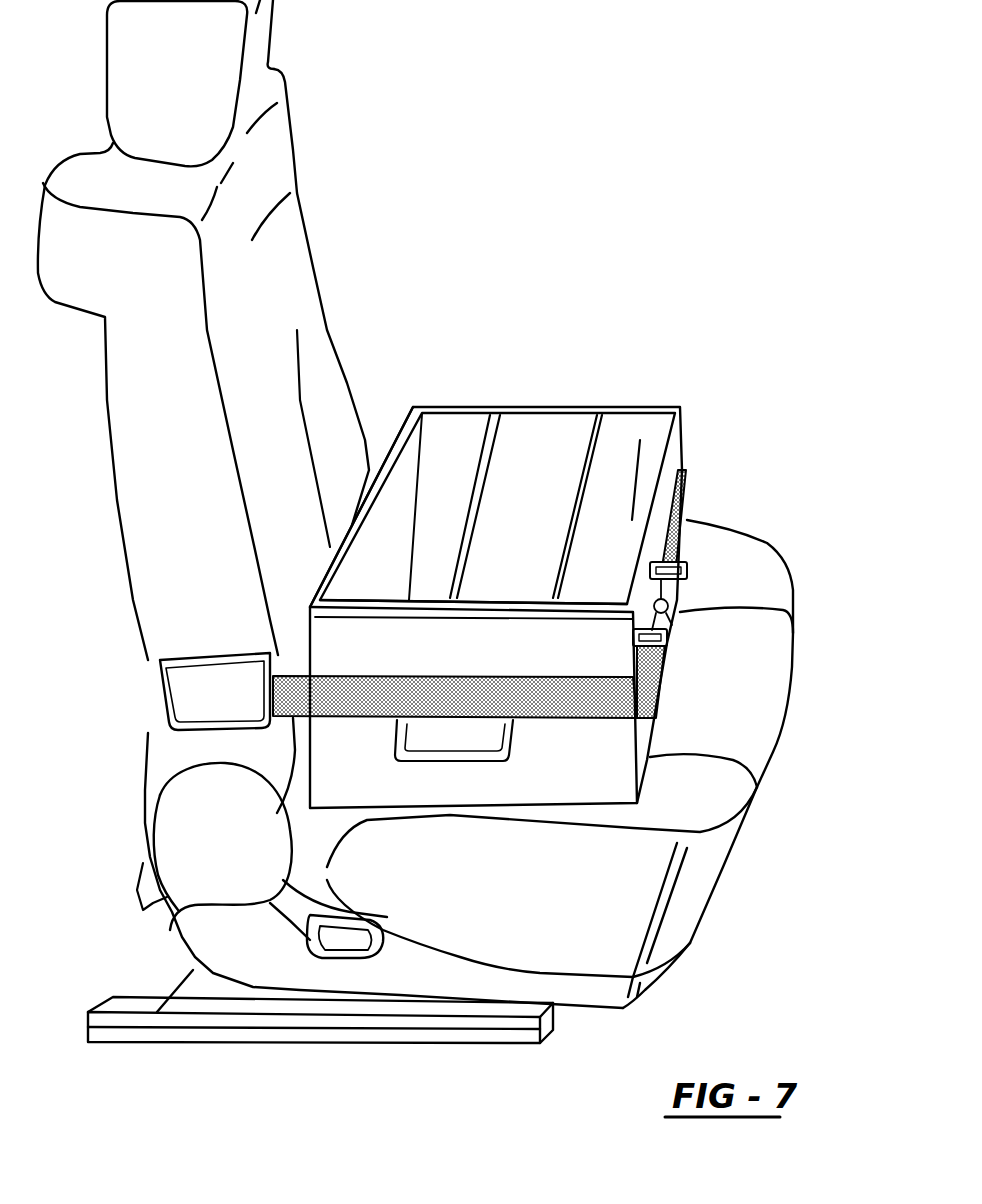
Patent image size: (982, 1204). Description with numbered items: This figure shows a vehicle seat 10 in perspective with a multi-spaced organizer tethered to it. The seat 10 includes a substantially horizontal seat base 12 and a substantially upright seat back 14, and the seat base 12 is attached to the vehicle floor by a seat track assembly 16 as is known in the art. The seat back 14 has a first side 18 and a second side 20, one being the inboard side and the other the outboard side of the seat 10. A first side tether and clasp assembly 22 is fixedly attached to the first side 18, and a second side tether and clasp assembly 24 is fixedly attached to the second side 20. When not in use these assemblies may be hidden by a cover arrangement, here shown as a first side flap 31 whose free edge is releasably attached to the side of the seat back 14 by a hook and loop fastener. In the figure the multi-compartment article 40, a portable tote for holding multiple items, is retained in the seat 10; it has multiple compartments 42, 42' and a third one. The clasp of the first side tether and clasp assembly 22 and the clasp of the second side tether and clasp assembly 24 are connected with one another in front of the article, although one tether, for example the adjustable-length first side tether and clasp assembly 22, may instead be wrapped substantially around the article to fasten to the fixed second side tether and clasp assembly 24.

The seat 10 is at (423, 275).
The seat base 12 is at (753, 720).
The seat back 14 is at (153, 547).
The seat track assembly 16 is at (147, 1033).
The first side 18 is at (153, 378).
The second side 20 is at (300, 193).
The first side tether and clasp assembly 22 is at (360, 700).
The second side tether and clasp assembly 24 is at (673, 540).
The first side flap 31 is at (197, 703).
The multi-compartment article 40 is at (433, 410).
The compartment 42 is at (510, 464).
The compartment 42' is at (599, 462).